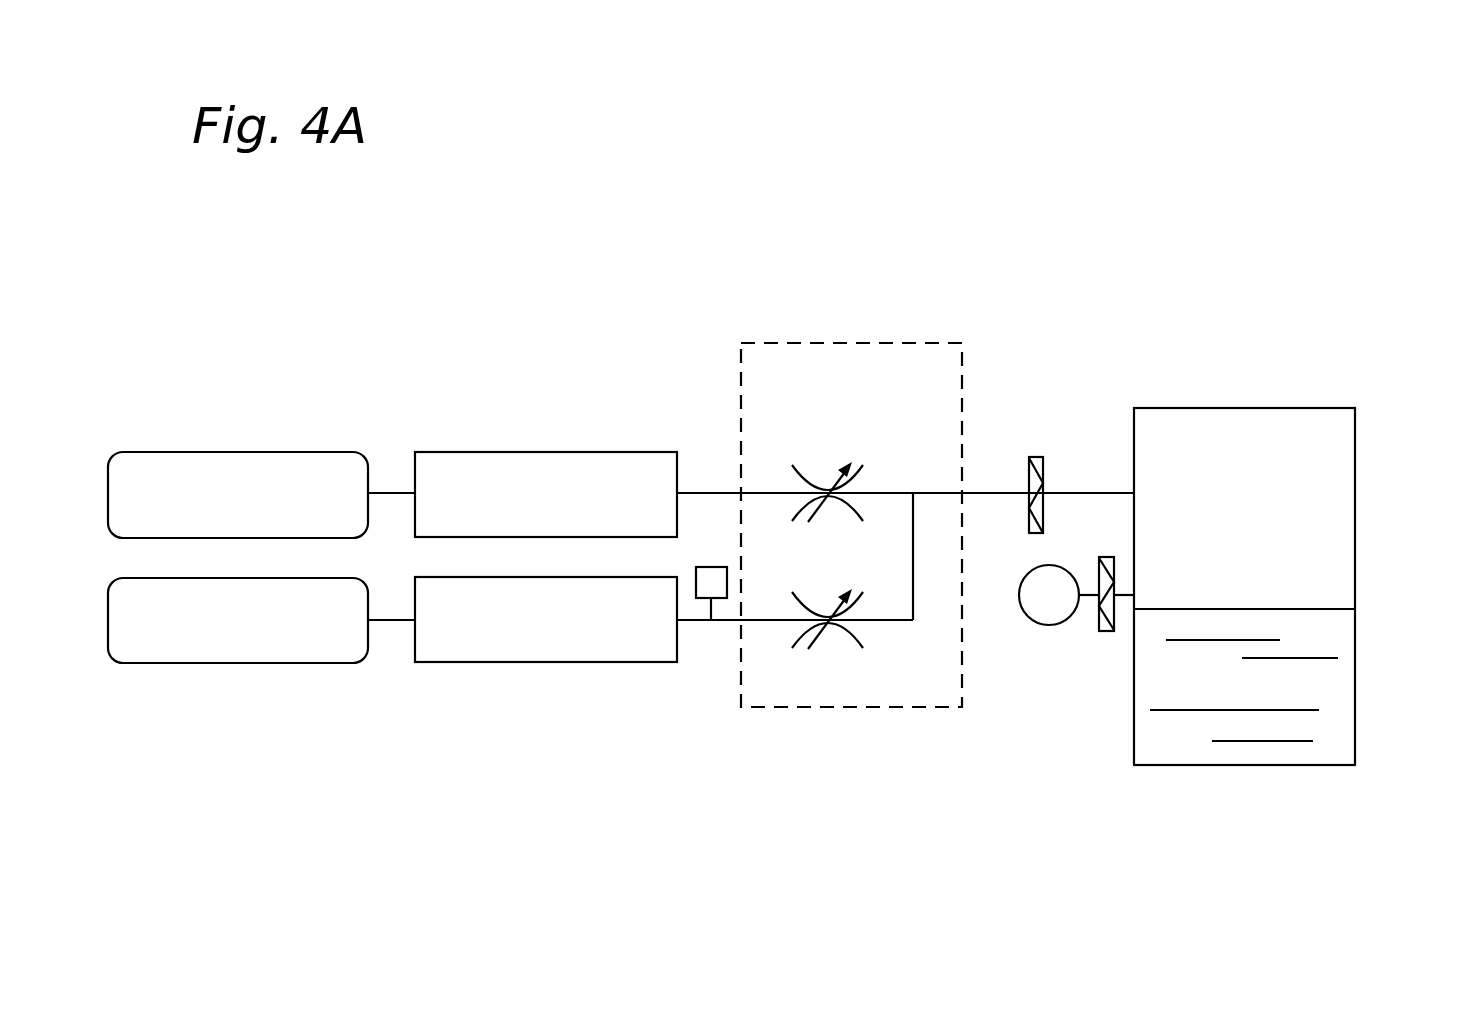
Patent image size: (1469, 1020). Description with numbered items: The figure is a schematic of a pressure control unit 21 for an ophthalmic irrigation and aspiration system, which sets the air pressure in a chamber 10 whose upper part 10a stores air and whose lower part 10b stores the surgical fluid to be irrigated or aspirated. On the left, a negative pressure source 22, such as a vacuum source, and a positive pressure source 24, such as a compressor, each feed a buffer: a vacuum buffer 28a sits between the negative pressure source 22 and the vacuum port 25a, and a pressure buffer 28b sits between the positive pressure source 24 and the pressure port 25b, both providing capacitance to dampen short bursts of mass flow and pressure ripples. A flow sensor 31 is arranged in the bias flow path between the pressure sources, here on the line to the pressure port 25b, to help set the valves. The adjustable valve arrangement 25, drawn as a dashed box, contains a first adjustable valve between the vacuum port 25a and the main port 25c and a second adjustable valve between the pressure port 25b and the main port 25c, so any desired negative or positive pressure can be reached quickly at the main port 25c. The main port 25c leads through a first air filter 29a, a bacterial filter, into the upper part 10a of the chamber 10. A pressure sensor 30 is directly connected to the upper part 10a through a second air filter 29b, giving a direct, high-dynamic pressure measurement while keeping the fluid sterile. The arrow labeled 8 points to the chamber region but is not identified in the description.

The tank assembly 8 is at (1255, 533).
The chamber 10 is at (1255, 579).
The upper part of the chamber 10a is at (1134, 435).
The lower part of the chamber 10b is at (1355, 735).
The pressure control unit 21 is at (702, 280).
The negative pressure source 22 is at (250, 470).
The positive pressure source 24 is at (236, 645).
The adjustable valve arrangement 25 is at (903, 343).
The vacuum port 25a is at (740, 493).
The pressure port 25b is at (740, 620).
The main port 25c is at (965, 493).
The vacuum buffer 28a is at (547, 472).
The pressure buffer 28b is at (552, 645).
The first air filter 29a is at (1033, 503).
The second air filter 29b is at (1108, 633).
The pressure sensor 30 is at (1038, 622).
The flow sensor 31 is at (710, 577).